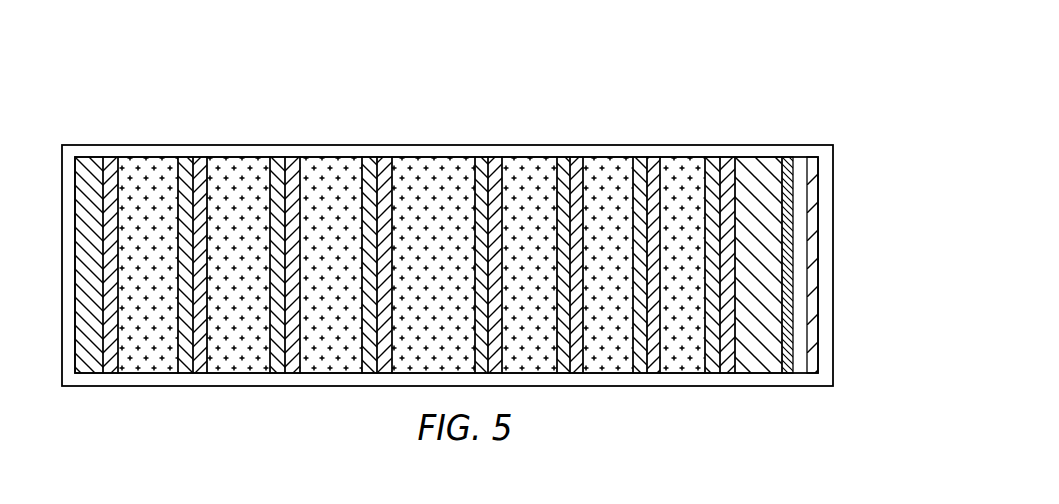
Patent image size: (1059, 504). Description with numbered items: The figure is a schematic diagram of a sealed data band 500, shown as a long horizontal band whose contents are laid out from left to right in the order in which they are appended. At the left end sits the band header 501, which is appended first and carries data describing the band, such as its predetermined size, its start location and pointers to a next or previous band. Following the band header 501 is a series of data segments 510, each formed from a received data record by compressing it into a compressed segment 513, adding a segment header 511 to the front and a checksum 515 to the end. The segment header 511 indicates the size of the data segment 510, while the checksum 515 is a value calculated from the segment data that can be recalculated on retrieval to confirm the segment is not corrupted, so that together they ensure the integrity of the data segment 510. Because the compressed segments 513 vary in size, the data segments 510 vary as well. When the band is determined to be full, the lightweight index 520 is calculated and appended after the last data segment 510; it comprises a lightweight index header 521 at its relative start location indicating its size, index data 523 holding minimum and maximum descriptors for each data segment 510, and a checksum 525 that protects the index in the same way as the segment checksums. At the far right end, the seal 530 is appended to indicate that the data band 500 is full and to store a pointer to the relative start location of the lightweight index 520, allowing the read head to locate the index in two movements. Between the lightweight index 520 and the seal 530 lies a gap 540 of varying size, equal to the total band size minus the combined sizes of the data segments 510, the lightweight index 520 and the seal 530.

The sealed data band 500 is at (116, 41).
The band header 501 is at (89, 157).
The data segment 510 is at (408, 247).
The segment header 511 is at (108, 373).
The compressed segment 513 is at (147, 373).
The checksum 515 is at (183, 373).
The lightweight index 520 is at (756, 250).
The lightweight index header 521 is at (723, 373).
The index data 523 is at (755, 373).
The checksum 525 is at (783, 373).
The seal 530 is at (812, 184).
The gap 540 is at (811, 128).